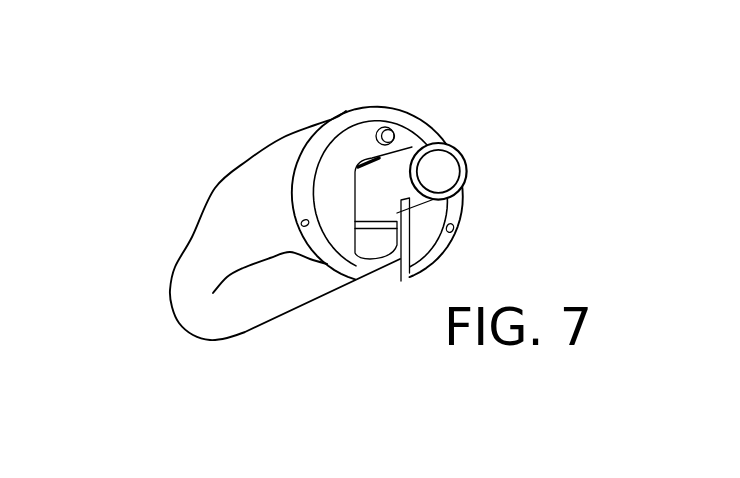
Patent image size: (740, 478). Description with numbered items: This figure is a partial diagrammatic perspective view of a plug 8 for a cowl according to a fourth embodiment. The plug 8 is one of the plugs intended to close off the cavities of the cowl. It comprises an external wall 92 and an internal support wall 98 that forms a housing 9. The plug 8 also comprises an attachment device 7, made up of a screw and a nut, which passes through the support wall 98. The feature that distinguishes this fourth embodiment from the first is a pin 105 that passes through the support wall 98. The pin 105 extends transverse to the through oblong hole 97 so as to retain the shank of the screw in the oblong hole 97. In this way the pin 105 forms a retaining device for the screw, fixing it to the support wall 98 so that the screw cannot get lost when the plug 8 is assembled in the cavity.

The attachment device 7 is at (443, 173).
The plug 8 is at (436, 111).
The housing 9 is at (205, 258).
The external wall 92 is at (217, 192).
The oblong hole 97 is at (375, 245).
The support wall 98 is at (350, 153).
The pin 105 is at (393, 231).